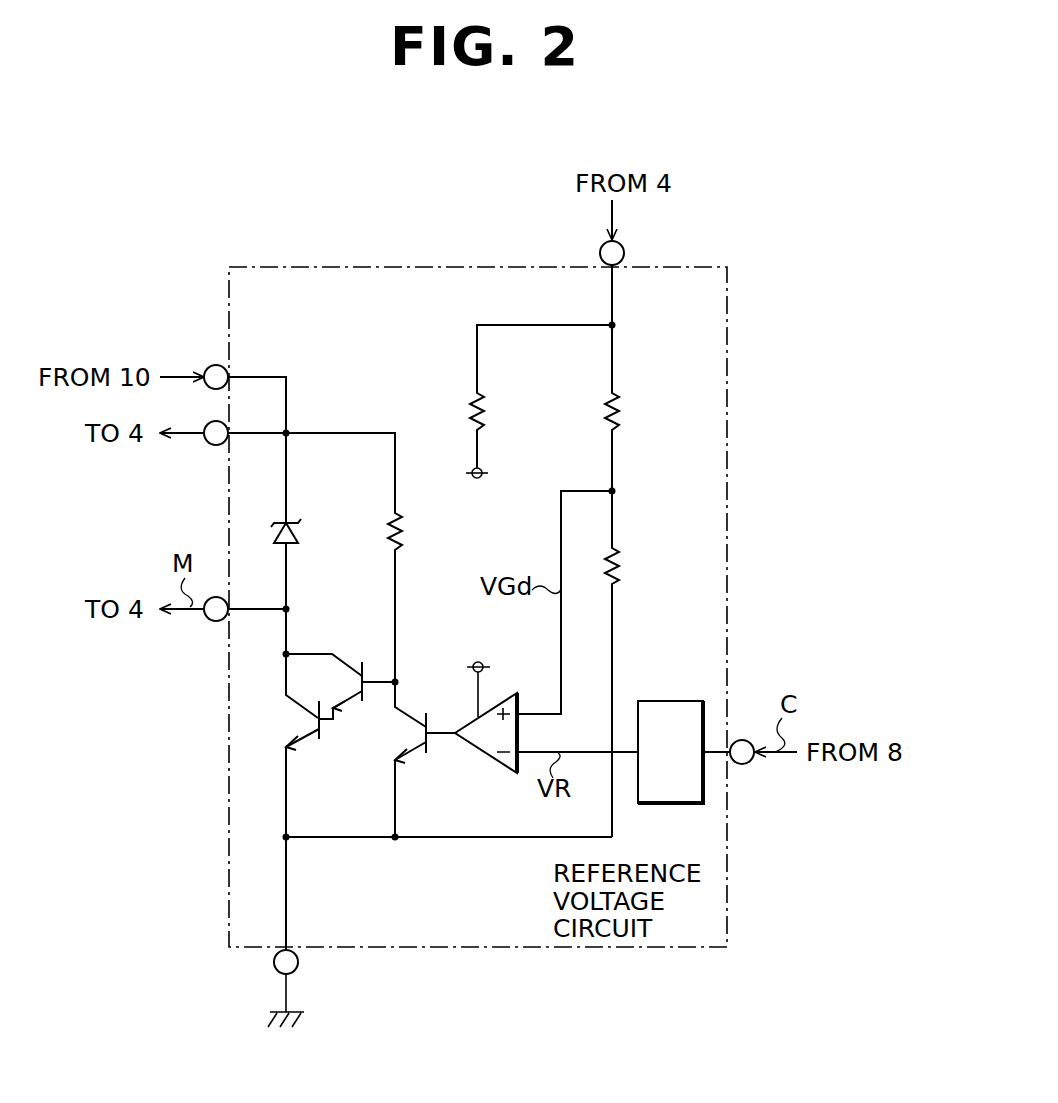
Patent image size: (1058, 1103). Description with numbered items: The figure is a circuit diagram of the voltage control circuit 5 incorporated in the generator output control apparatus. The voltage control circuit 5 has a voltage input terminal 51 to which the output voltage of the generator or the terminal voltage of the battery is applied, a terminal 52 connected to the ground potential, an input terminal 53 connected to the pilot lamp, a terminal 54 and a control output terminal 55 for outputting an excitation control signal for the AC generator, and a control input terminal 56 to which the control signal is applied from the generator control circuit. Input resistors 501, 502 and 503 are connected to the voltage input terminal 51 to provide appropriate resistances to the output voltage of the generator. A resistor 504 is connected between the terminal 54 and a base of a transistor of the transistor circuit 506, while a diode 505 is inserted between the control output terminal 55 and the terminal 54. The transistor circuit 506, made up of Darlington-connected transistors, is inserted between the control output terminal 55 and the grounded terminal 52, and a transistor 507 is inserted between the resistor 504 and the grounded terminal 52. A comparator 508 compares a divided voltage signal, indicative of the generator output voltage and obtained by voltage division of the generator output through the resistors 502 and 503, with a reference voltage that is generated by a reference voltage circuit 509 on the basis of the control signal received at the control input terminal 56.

The voltage control circuit 5 is at (300, 265).
The voltage input terminal 51 is at (624, 250).
The terminal connected to ground potential 52 is at (299, 963).
The input terminal 53 is at (207, 368).
The terminal 54 is at (208, 443).
The control output terminal 55 is at (208, 620).
The control input terminal 56 is at (752, 762).
The input resistor 501 is at (488, 403).
The input resistor 502 is at (623, 403).
The input resistor 503 is at (623, 556).
The resistor 504 is at (405, 527).
The diode 505 is at (296, 528).
The transistor circuit 506 is at (320, 654).
The transistor 507 is at (388, 737).
The comparator 508 is at (478, 744).
The reference voltage circuit 509 is at (662, 804).